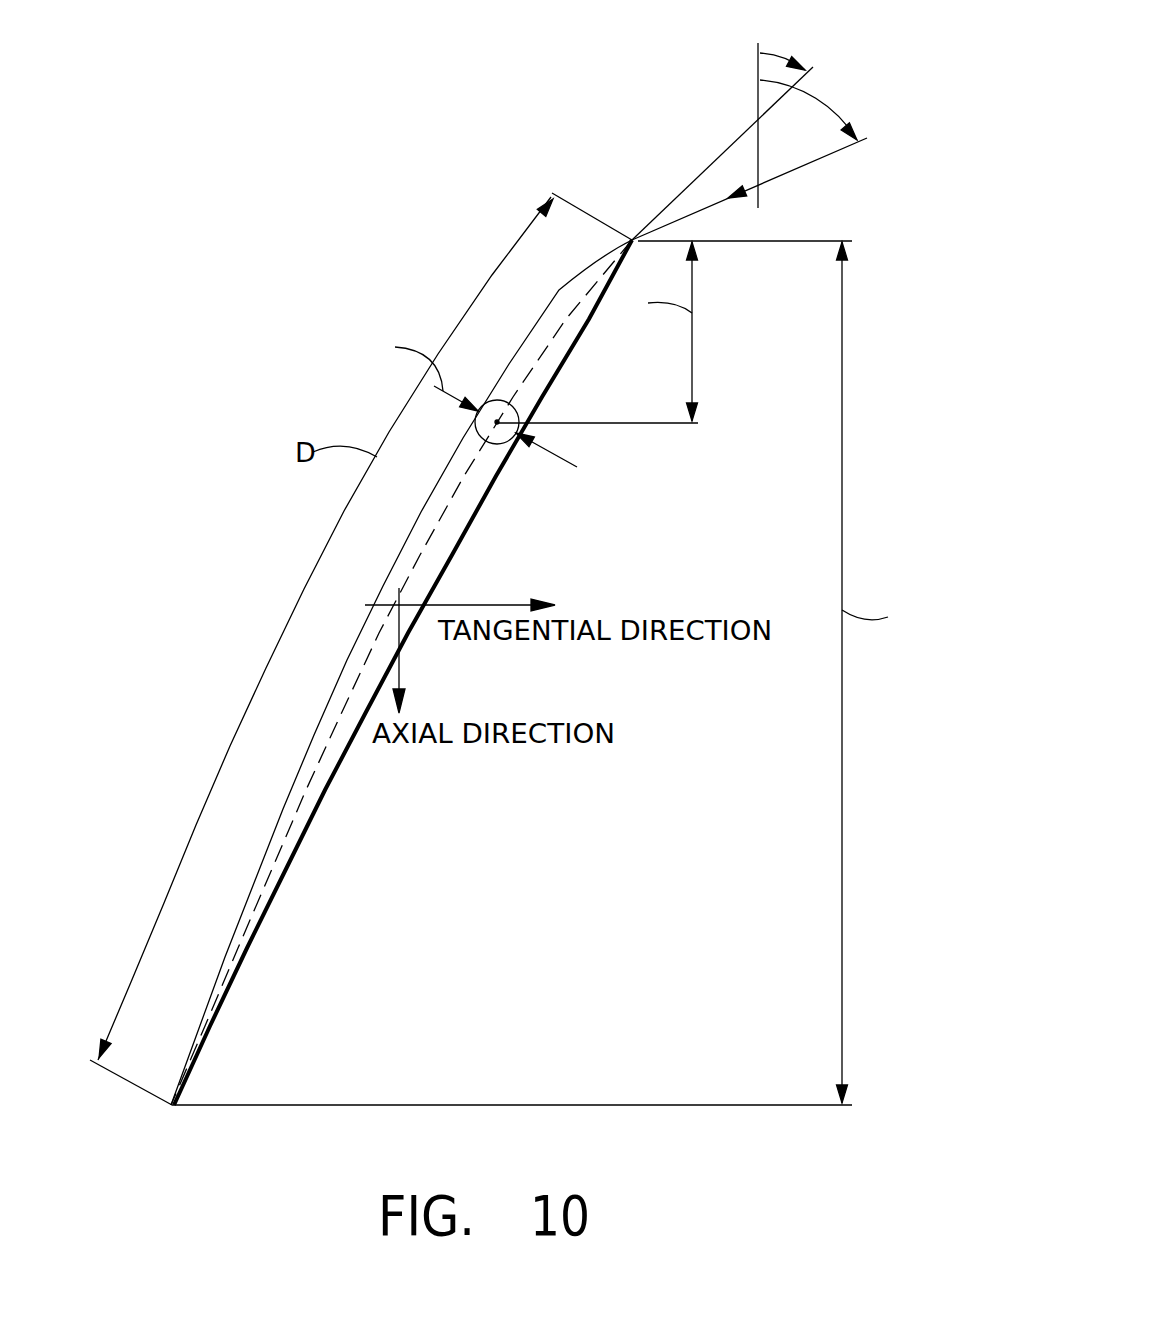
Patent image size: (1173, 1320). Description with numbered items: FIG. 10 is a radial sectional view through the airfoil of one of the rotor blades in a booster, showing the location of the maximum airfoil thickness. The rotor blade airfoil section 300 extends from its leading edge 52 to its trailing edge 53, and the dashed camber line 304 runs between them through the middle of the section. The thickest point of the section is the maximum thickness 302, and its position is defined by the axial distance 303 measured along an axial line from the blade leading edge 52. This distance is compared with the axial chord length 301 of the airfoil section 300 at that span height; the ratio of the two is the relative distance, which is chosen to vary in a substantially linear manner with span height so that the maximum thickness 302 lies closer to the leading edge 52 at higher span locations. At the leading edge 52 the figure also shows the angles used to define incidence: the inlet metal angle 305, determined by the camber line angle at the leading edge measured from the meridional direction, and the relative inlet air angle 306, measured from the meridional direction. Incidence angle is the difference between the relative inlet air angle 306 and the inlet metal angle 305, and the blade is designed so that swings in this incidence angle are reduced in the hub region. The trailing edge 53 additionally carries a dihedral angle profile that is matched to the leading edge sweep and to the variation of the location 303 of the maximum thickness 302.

The leading edge 52 is at (633, 240).
The trailing edge 53 is at (174, 1106).
The rotor blade airfoil section 300 is at (337, 768).
The axial chord length 301 is at (842, 702).
The maximum thickness 302 is at (562, 462).
The axial distance 303 is at (692, 372).
The camber line 304 is at (437, 531).
The inlet metal angle 305 is at (765, 52).
The relative inlet air angle 306 is at (810, 90).